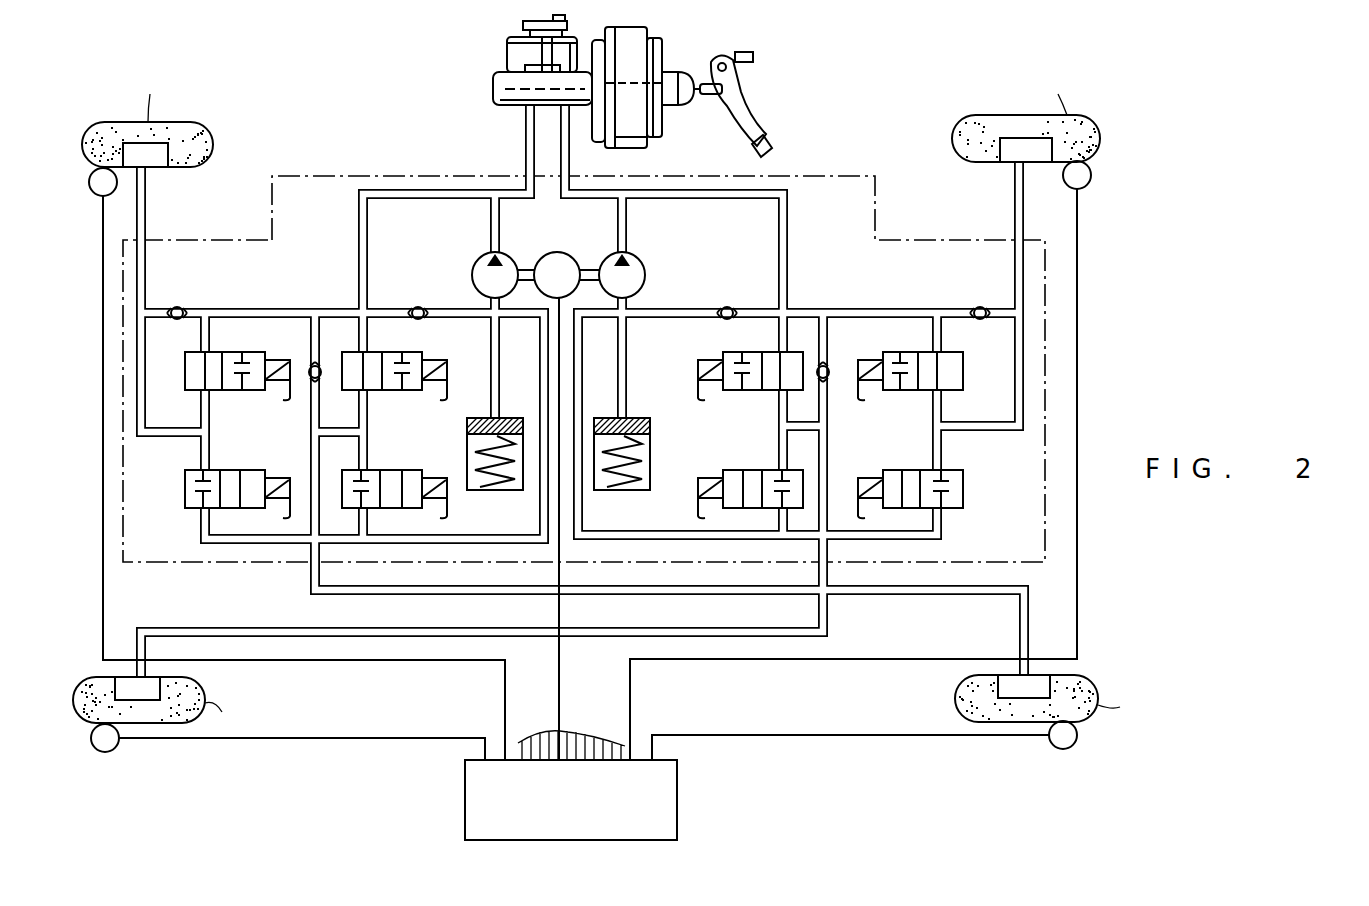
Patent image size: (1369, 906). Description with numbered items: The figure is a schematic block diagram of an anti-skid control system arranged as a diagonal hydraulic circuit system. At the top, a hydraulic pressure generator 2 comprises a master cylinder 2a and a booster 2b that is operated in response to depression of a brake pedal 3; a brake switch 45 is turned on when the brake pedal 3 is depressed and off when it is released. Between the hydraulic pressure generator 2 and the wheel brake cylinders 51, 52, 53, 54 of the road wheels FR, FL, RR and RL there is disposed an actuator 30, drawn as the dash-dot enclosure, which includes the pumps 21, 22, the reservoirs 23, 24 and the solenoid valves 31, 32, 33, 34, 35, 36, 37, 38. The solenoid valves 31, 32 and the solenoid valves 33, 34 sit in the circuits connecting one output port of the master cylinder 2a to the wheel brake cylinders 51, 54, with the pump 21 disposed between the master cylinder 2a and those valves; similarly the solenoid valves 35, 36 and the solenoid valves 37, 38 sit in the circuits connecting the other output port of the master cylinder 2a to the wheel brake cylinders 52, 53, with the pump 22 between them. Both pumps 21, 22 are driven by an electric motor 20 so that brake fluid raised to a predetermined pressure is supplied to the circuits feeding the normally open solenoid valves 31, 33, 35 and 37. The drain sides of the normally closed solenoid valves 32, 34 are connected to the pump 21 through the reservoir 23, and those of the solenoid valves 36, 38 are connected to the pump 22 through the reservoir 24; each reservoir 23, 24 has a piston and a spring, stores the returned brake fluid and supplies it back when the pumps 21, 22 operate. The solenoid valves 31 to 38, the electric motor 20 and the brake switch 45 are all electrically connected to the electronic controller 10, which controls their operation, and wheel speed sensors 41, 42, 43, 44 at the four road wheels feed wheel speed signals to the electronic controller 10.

The hydraulic pressure generator 2 is at (576, 92).
The master cylinder 2a is at (492, 112).
The booster 2b is at (647, 137).
The brake pedal 3 is at (746, 118).
The brake switch 45 is at (745, 52).
The electronic controller 10 is at (677, 800).
The electric motor 20 is at (576, 252).
The pump 21 is at (482, 254).
The pump 22 is at (641, 259).
The reservoir 23 is at (477, 490).
The reservoir 24 is at (612, 490).
The actuator 30 is at (848, 173).
The solenoid valve 31 is at (238, 352).
The solenoid valve 32 is at (258, 470).
The solenoid valve 33 is at (413, 352).
The solenoid valve 34 is at (411, 470).
The solenoid valve 35 is at (733, 351).
The solenoid valve 36 is at (729, 470).
The solenoid valve 37 is at (898, 352).
The solenoid valve 38 is at (894, 470).
The wheel speed sensor 41 is at (92, 192).
The wheel speed sensor 42 is at (118, 748).
The wheel speed sensor 43 is at (1087, 188).
The wheel speed sensor 44 is at (1050, 748).
The wheel brake cylinder 51 is at (157, 156).
The wheel brake cylinder 52 is at (155, 677).
The wheel brake cylinder 53 is at (1010, 150).
The wheel brake cylinder 54 is at (1005, 680).